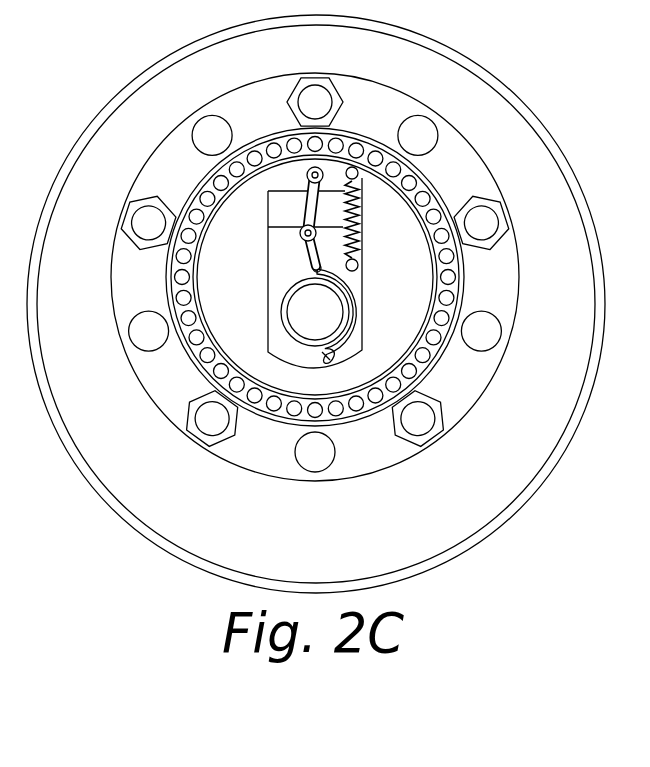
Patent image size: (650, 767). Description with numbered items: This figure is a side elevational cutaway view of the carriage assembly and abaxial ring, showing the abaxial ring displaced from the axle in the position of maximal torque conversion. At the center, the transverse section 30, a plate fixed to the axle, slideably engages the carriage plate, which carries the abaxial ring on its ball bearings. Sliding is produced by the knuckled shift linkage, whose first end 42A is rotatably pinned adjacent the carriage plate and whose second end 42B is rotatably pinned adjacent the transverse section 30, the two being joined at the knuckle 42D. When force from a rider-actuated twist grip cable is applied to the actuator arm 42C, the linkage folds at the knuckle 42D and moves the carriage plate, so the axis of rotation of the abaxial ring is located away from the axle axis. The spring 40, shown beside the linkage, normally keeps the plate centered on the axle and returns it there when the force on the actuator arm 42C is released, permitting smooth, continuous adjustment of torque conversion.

The transverse section 30 is at (278, 255).
The spring 40 is at (366, 175).
The first end 42A is at (308, 172).
The second end 42B is at (314, 270).
The actuator arm 42C is at (333, 358).
The knuckle 42D is at (268, 227).